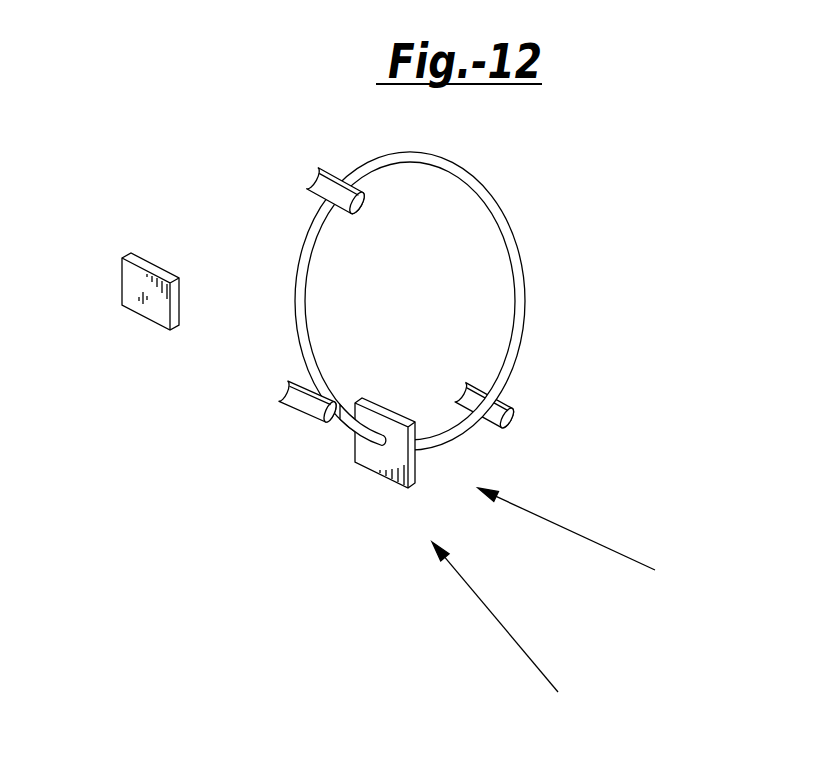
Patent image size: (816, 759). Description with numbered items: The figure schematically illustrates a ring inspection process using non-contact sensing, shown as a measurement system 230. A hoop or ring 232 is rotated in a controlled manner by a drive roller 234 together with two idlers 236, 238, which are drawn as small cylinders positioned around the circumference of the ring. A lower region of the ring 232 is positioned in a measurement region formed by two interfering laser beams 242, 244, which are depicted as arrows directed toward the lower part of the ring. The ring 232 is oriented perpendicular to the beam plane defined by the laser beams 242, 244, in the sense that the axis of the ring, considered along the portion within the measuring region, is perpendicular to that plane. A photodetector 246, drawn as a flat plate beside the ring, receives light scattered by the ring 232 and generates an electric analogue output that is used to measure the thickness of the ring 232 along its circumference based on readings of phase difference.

The measurement system 230 is at (220, 150).
The ring 232 is at (482, 177).
The drive roller 234 is at (510, 425).
The idler 236 is at (300, 415).
The idler 238 is at (325, 167).
The laser beam 242 is at (602, 542).
The laser beam 244 is at (500, 625).
The photodetector 246 is at (138, 317).